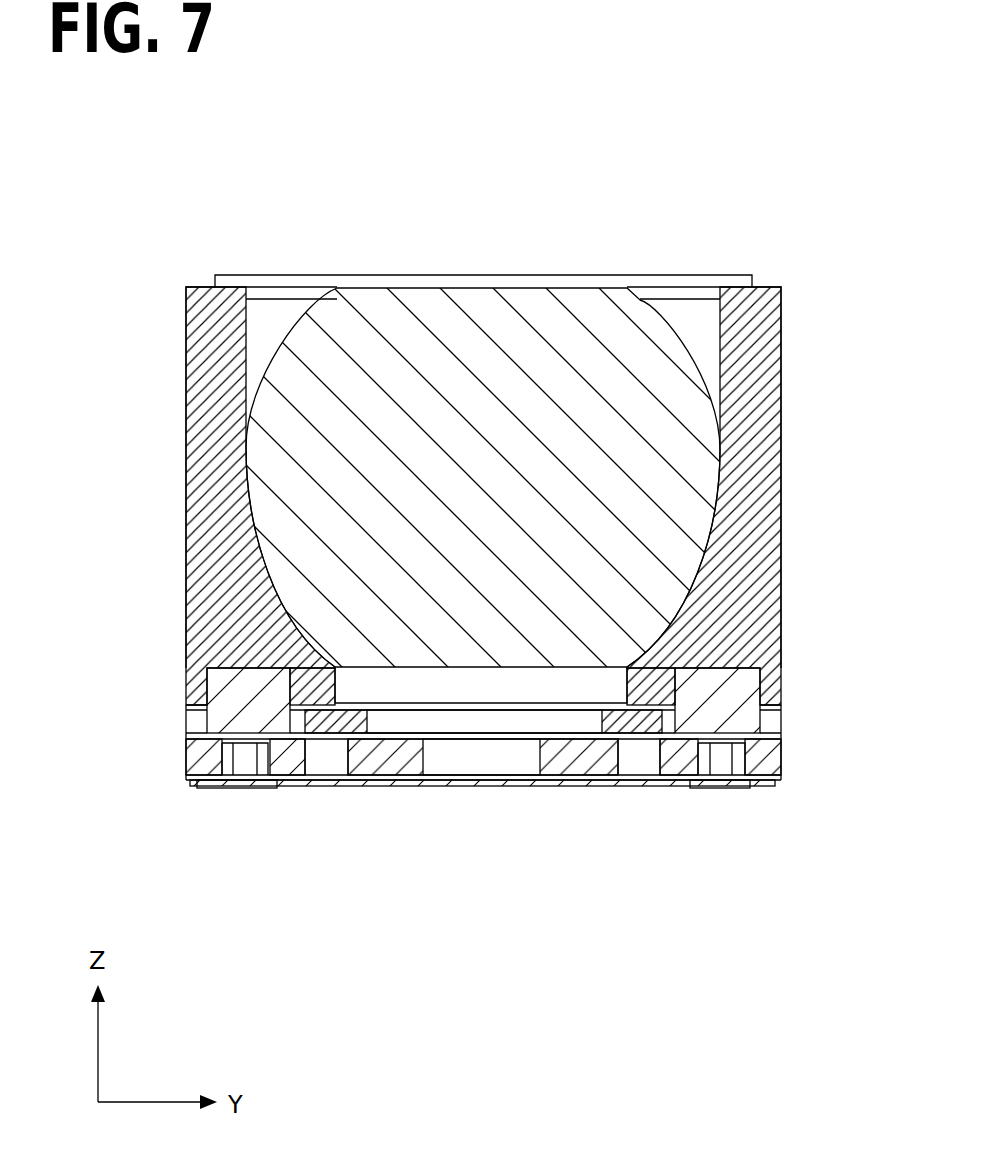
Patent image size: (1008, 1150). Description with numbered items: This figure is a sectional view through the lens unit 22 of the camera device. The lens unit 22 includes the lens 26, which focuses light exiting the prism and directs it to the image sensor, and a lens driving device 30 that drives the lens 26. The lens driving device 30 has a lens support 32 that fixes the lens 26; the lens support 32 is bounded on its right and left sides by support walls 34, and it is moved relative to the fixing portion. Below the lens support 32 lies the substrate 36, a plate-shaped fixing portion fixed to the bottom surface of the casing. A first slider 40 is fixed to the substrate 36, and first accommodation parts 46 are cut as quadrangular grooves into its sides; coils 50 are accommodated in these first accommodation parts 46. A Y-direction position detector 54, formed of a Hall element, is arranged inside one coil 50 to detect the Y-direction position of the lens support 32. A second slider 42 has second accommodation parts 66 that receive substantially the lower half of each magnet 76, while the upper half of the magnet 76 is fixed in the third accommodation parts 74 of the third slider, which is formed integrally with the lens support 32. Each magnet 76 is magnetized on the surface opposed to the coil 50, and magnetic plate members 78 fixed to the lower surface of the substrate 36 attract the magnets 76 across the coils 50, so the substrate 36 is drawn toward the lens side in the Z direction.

The lens unit 22 is at (666, 183).
The lens 26 is at (490, 318).
The lens driving device 30 is at (793, 758).
The lens support 32 is at (793, 447).
The support wall 34 is at (222, 428).
The substrate 36 is at (512, 778).
The first slider 40 is at (573, 776).
The second slider 42 is at (608, 732).
The first accommodation part 46 is at (335, 760).
The coil 50 is at (190, 765).
The Y-direction position detector 54 is at (757, 783).
The second accommodation part 66 is at (310, 735).
The third accommodation part 74 is at (294, 690).
The magnet 76 is at (232, 690).
The magnetic plate member 78 is at (228, 784).